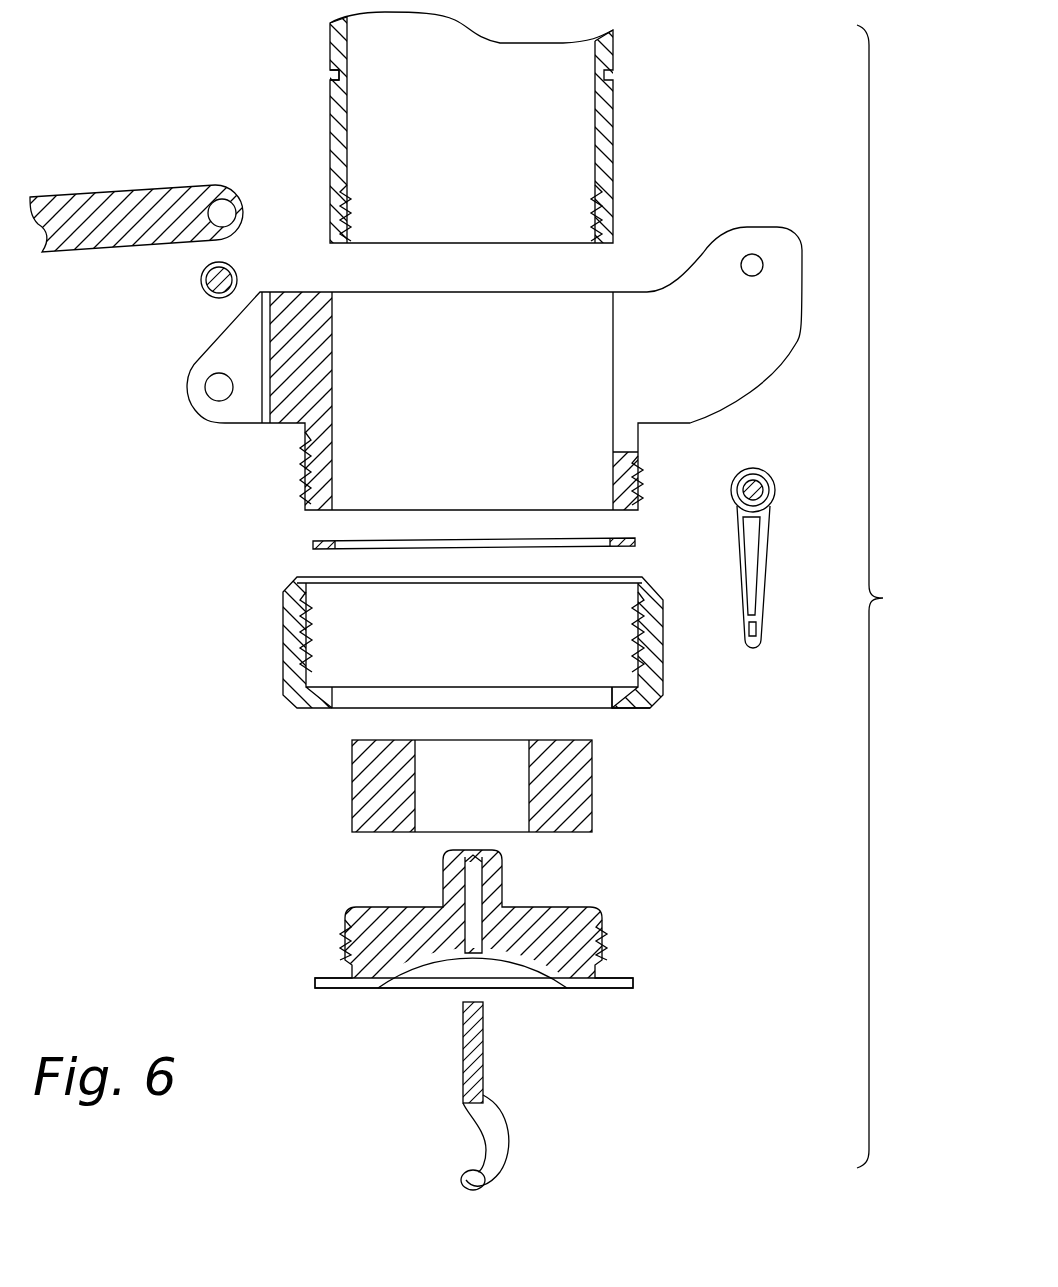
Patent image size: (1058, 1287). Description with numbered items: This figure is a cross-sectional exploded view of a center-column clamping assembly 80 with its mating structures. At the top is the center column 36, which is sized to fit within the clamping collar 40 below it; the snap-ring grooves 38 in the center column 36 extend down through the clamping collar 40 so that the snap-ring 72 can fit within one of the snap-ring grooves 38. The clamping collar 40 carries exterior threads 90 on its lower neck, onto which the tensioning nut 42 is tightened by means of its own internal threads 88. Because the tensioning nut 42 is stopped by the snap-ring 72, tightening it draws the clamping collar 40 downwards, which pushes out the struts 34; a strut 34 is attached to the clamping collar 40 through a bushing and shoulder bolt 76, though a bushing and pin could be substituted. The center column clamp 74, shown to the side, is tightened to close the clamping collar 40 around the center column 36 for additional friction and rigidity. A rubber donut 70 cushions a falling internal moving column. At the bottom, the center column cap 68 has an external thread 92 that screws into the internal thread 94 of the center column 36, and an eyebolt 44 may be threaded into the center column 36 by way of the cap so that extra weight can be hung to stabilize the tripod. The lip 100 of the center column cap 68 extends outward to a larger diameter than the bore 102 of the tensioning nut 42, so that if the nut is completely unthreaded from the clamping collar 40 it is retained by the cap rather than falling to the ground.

The struts 34 is at (122, 205).
The center column 36 is at (613, 56).
The snap-ring grooves 38 is at (330, 75).
The clamping collar 40 is at (703, 262).
The tensioning nut 42 is at (283, 655).
The eyebolt 44 is at (500, 1118).
The center column cap 68 is at (605, 935).
The rubber donut 70 is at (352, 817).
The snap-ring 72 is at (313, 545).
The center column clamp 74 is at (771, 472).
The bushing and shoulder bolt 76 is at (200, 285).
The center-column clamping assembly 80 is at (905, 596).
The internal threads 88 is at (310, 640).
The exterior threads 90 is at (304, 470).
The external thread 92 is at (342, 947).
The internal thread 94 is at (350, 212).
The lip 100 is at (633, 983).
The bore 102 is at (613, 693).